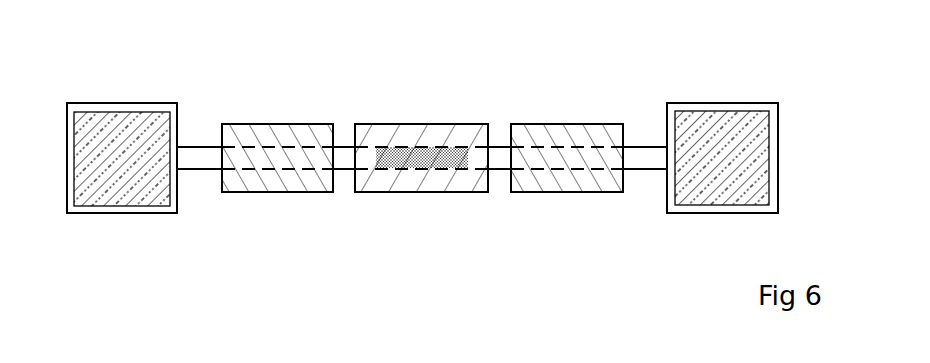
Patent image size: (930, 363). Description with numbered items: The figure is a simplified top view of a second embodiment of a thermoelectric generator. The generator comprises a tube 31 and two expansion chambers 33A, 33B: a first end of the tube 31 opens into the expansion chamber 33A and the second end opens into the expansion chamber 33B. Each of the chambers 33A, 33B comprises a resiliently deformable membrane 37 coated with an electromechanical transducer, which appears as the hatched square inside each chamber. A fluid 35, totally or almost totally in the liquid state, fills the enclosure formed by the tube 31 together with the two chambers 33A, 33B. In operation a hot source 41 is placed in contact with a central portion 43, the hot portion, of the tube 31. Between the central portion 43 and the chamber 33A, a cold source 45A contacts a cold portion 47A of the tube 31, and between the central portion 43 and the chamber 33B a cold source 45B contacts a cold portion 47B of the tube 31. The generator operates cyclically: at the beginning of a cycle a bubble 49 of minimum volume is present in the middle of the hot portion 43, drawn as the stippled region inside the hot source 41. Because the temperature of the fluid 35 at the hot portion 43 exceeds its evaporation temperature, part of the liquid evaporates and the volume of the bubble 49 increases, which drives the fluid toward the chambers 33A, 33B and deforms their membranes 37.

The expansion chamber 33A is at (122, 145).
The expansion chamber 33B is at (721, 150).
The resiliently deformable membrane 37 is at (684, 102).
The fluid 35 is at (192, 155).
The tube 31 is at (196, 172).
The cold source 45A is at (285, 132).
The cold portion 47A is at (288, 145).
The hot source 41 is at (424, 132).
The central portion 43 is at (450, 148).
The bubble 49 is at (432, 152).
The cold source 45B is at (567, 132).
The cold portion 47B is at (577, 145).